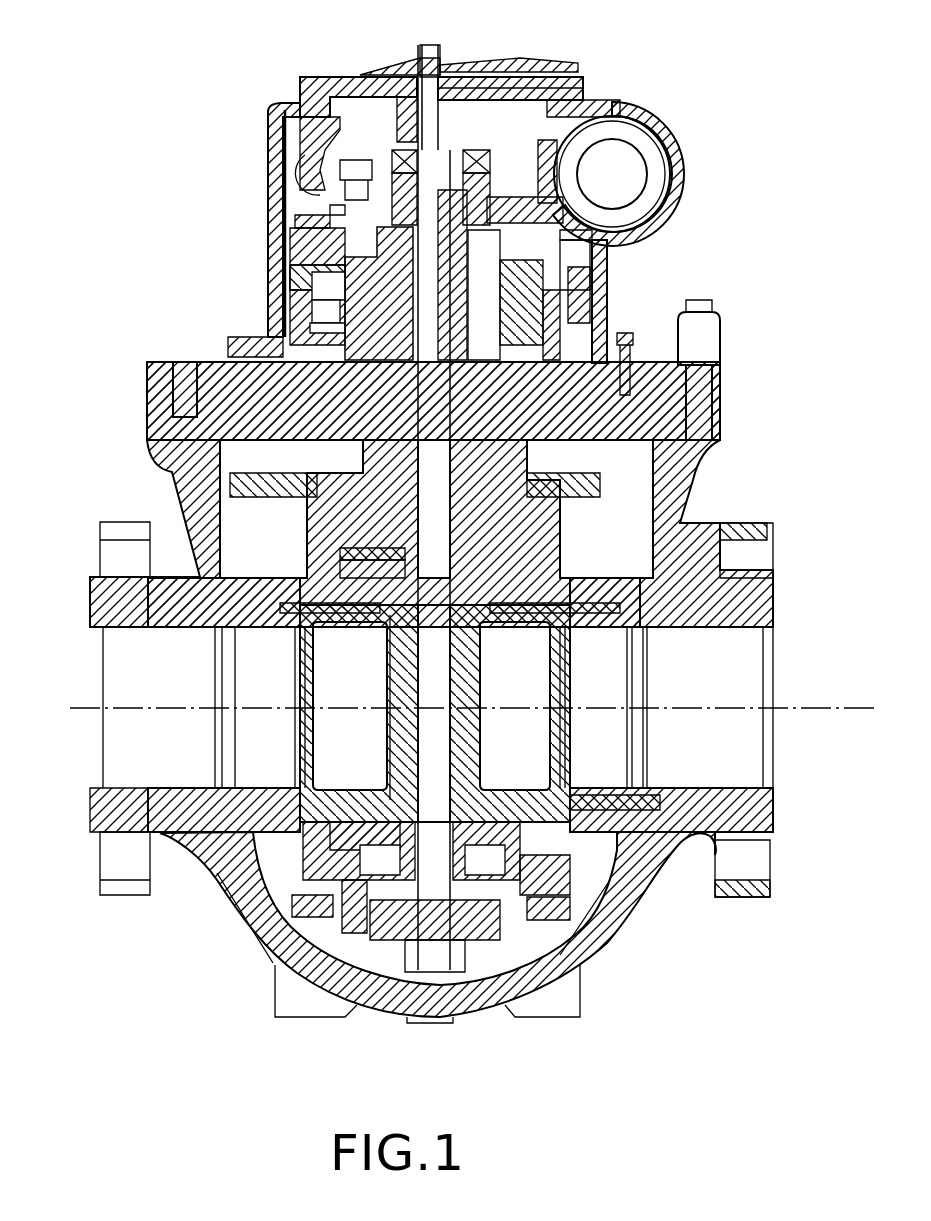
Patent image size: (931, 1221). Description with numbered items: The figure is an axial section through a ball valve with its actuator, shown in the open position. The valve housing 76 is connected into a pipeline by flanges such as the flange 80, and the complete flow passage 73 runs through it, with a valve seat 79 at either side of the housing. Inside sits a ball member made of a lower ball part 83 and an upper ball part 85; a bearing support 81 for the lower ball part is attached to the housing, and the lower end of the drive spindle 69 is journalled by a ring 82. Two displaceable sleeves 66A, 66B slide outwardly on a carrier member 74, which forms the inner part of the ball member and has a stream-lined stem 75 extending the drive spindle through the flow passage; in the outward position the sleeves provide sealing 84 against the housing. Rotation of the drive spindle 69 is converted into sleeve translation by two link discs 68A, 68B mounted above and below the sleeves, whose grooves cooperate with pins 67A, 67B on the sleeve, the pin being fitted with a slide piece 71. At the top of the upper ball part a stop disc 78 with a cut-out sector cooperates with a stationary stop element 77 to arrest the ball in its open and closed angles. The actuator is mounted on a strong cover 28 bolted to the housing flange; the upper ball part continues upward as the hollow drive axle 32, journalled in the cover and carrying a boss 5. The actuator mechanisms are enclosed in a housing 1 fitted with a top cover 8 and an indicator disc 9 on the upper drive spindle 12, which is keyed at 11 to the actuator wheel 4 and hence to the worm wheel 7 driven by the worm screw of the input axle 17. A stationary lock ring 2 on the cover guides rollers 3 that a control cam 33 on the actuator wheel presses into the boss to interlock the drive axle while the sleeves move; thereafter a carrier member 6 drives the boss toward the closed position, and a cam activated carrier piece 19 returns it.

The housing 1 is at (600, 258).
The lock ring 2 is at (560, 333).
The rollers 3 is at (292, 265).
The actuator wheel 4 is at (395, 182).
The boss 5 is at (320, 312).
The carrier member 6 is at (300, 245).
The worm wheel 7 is at (300, 172).
The top cover 8 is at (540, 90).
The indicator disc 9 is at (405, 72).
The key connection 11 is at (480, 178).
The upper drive spindle 12 is at (304, 138).
The input axle 17 is at (622, 178).
The carrier piece 19 is at (595, 262).
The cover 28 is at (700, 390).
The hollow drive axle 32 is at (330, 325).
The control cam 33 is at (315, 285).
The displaceable sleeve 66A is at (372, 625).
The displaceable sleeve 66B is at (605, 792).
The pin 67A is at (345, 563).
The pin 67B is at (330, 855).
The link disc 68A is at (370, 545).
The link disc 68B is at (563, 887).
The drive spindle 69 is at (440, 753).
The slide piece 71 is at (375, 825).
The flow passage 73 is at (108, 740).
The carrier member 74 is at (367, 707).
The stem 75 is at (385, 730).
The valve housing 76 is at (720, 430).
The stop element 77 is at (650, 502).
The disc 78 is at (578, 485).
The valve seat 79 is at (697, 845).
The flange 80 is at (775, 868).
The bearing support 81 is at (578, 950).
The ring 82 is at (466, 970).
The lower ball part 83 is at (290, 890).
The sealing 84 is at (138, 708).
The upper ball part 85 is at (345, 490).